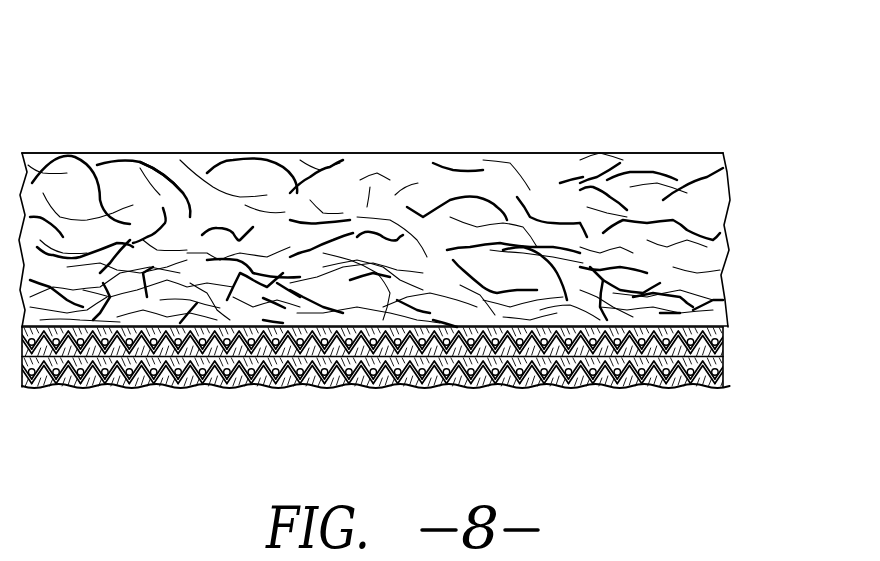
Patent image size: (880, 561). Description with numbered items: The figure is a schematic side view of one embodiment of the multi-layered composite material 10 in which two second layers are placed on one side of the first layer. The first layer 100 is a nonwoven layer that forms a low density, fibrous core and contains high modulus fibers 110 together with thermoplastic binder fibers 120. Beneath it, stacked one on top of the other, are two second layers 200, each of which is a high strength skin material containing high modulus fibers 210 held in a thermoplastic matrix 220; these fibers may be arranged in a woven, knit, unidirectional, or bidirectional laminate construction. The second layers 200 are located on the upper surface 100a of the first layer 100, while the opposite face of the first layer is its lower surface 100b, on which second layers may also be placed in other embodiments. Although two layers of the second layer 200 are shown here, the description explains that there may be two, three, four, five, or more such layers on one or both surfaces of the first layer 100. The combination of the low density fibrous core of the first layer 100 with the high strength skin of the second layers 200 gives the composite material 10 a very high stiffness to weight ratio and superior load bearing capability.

The multi-layered composite material 10 is at (584, 119).
The first layer 100 is at (758, 153).
The upper surface 100a is at (727, 327).
The lower surface 100b is at (722, 153).
The high modulus fibers 110 is at (166, 178).
The thermoplastic binder fibers 120 is at (284, 308).
The second layer 200 is at (418, 391).
The high modulus fibers 210 is at (128, 388).
The thermoplastic matrix 220 is at (235, 387).